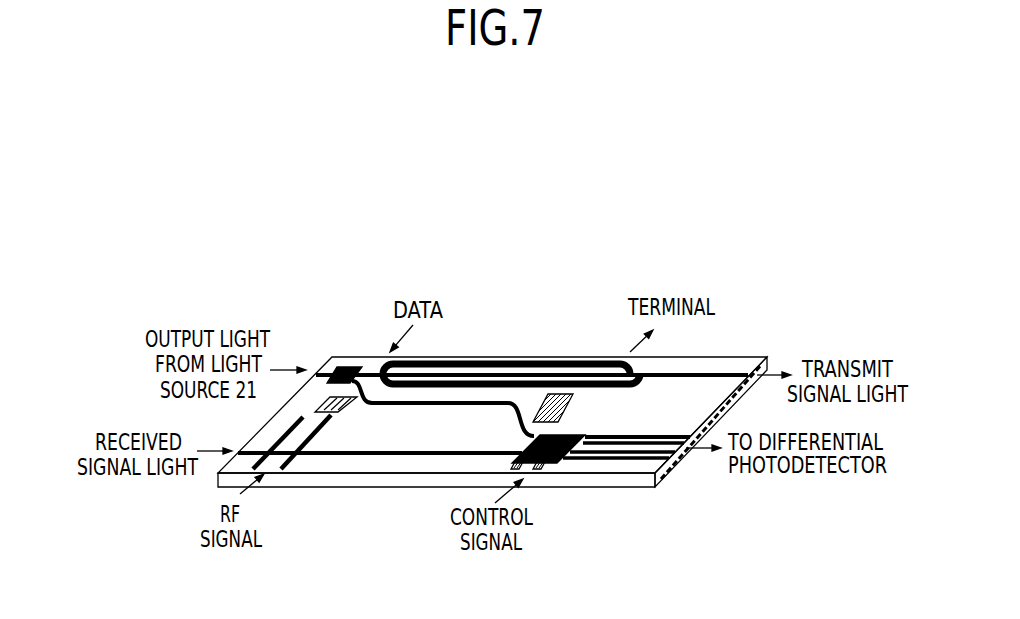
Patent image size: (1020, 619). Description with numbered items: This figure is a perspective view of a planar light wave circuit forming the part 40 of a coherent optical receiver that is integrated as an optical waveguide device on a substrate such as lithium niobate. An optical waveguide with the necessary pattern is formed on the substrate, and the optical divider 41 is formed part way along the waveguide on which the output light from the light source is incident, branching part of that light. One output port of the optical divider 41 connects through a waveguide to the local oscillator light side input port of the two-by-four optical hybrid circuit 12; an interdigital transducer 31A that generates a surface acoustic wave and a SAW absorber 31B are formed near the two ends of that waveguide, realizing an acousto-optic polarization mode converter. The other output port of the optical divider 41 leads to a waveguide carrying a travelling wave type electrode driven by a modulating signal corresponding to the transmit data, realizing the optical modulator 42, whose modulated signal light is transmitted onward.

The part enclosed by the dotted line 40 is at (728, 357).
The optical divider 41 is at (345, 366).
The optical modulator 42 is at (499, 347).
The interdigital transducer (IDT) 31A is at (343, 410).
The SAW absorber 31B is at (563, 392).
The 2×4 optical hybrid circuit 12 is at (556, 461).